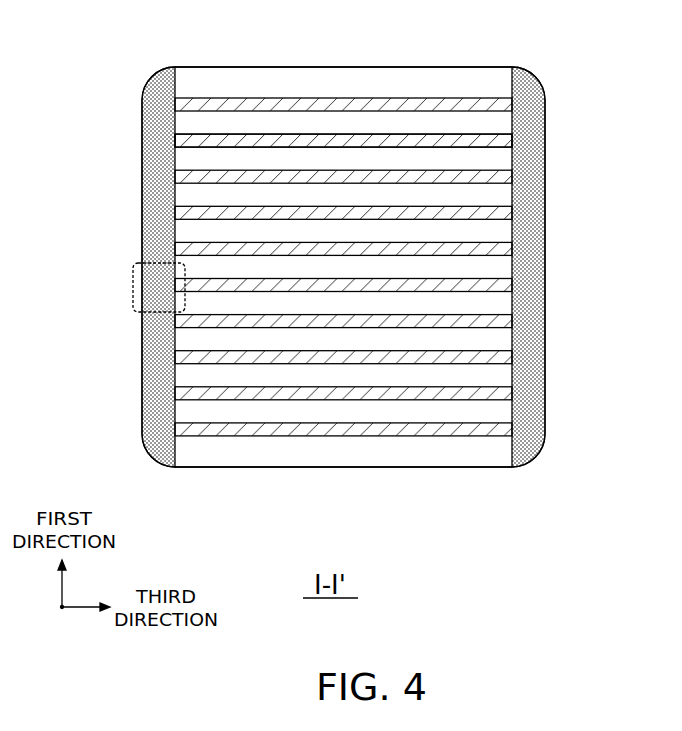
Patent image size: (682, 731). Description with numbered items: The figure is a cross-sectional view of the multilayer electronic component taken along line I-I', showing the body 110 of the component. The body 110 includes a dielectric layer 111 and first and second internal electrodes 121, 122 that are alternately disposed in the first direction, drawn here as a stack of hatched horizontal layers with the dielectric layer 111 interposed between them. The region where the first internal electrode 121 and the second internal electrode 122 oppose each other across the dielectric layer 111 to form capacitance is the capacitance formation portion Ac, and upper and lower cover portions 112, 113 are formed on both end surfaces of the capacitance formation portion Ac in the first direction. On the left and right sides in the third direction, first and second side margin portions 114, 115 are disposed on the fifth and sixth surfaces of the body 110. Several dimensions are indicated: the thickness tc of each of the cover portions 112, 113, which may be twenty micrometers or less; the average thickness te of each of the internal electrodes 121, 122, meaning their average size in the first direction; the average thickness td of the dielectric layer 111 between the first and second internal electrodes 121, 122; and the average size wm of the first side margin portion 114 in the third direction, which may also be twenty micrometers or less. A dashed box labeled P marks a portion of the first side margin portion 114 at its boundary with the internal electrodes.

The body 110 is at (333, 65).
The dielectric layer 111 is at (505, 163).
The upper cover portion 112 is at (253, 80).
The lower cover portion 113 is at (323, 467).
The first side margin portion 114 is at (157, 345).
The second side margin portion 115 is at (535, 345).
The first internal electrode 121 is at (410, 97).
The second internal electrode 122 is at (440, 143).
The average size of the first side margin portion in the third direction wm is at (175, 67).
The thickness of cover portion tc is at (142, 67).
The average thickness of internal electrode te is at (142, 98).
The average thickness of dielectric layer td is at (142, 138).
The capacitance formation portion Ac is at (160, 237).
The portion P is at (133, 287).